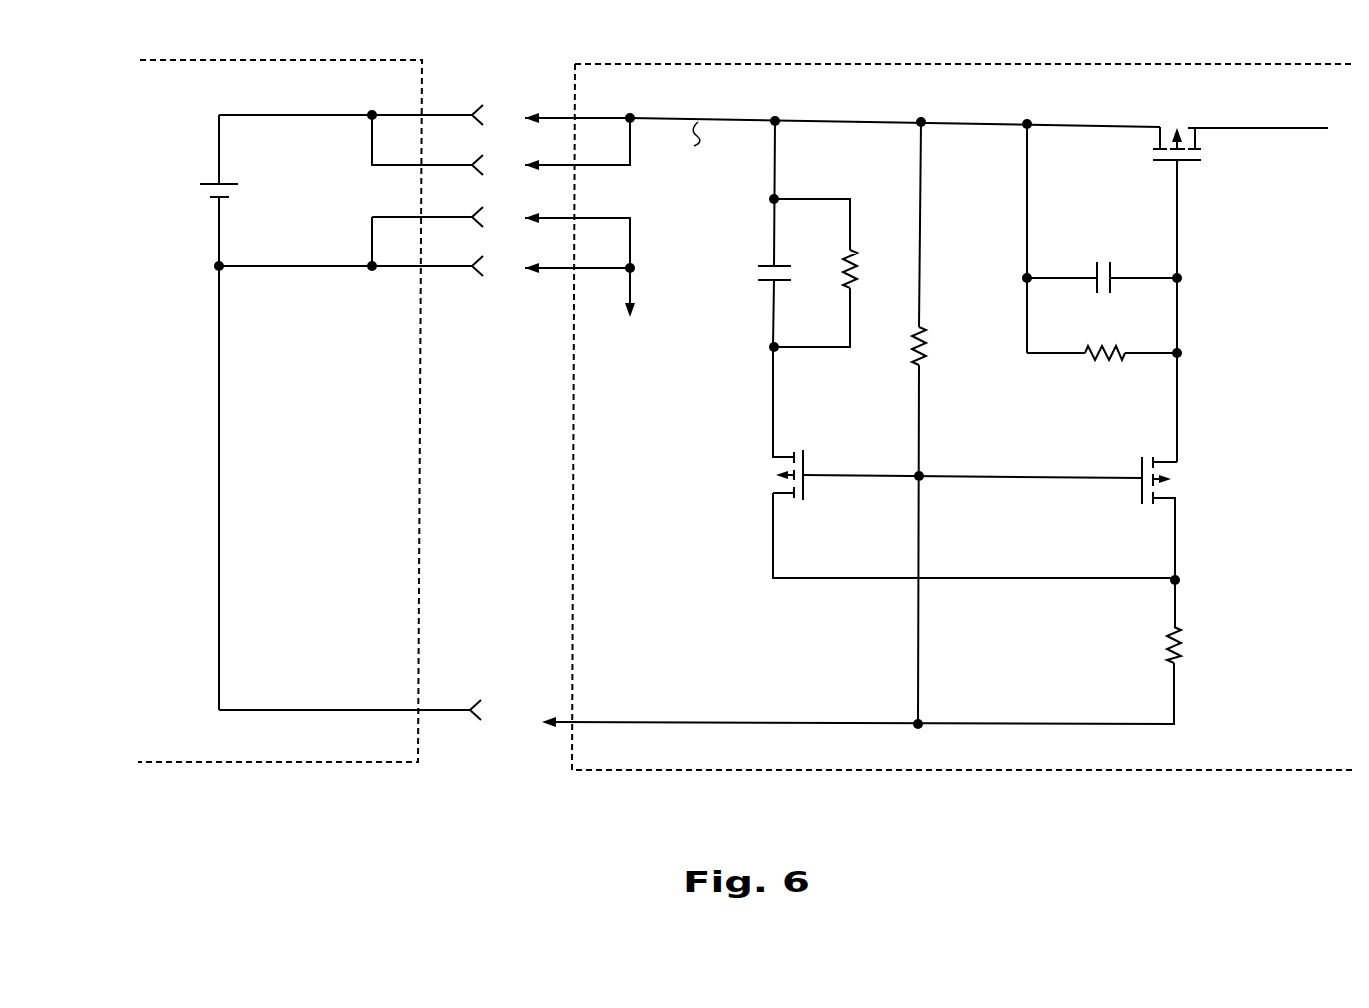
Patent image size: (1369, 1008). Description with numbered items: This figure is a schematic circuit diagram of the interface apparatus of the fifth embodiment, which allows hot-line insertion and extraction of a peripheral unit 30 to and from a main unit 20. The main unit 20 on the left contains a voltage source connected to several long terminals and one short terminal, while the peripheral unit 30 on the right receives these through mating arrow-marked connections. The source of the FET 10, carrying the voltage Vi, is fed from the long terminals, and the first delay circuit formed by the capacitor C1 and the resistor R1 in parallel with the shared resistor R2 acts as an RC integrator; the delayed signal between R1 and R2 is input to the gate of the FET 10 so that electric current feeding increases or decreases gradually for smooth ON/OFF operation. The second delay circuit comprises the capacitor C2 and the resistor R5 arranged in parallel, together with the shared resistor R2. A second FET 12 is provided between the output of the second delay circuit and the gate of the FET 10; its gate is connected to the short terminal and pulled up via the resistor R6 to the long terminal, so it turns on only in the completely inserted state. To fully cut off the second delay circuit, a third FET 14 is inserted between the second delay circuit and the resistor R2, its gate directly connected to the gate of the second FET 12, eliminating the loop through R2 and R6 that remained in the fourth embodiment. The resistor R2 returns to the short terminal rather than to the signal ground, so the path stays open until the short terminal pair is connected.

The FET 10 is at (1203, 166).
The second FET 12 is at (1185, 481).
The third FET 14 is at (760, 475).
The main unit 20 is at (278, 762).
The peripheral unit 30 is at (938, 450).
The capacitor C1 is at (1102, 236).
The capacitor C2 is at (754, 234).
The resistor R1 is at (1104, 335).
The delay circuit resistor R2 is at (1199, 647).
The resistor R5 is at (839, 273).
The resistor R6 is at (945, 420).